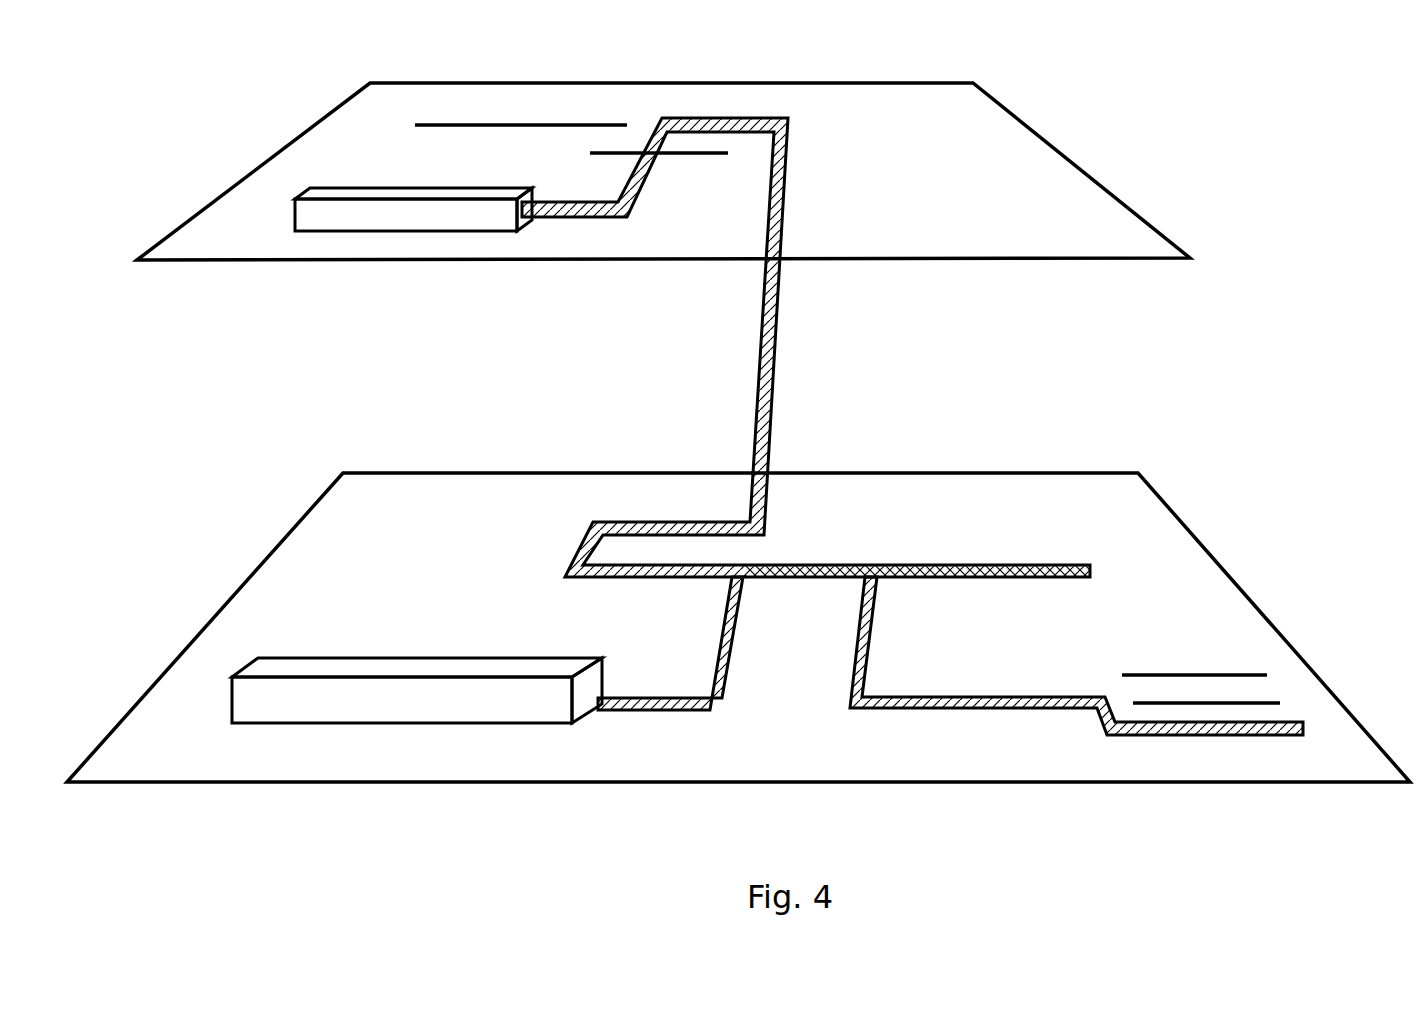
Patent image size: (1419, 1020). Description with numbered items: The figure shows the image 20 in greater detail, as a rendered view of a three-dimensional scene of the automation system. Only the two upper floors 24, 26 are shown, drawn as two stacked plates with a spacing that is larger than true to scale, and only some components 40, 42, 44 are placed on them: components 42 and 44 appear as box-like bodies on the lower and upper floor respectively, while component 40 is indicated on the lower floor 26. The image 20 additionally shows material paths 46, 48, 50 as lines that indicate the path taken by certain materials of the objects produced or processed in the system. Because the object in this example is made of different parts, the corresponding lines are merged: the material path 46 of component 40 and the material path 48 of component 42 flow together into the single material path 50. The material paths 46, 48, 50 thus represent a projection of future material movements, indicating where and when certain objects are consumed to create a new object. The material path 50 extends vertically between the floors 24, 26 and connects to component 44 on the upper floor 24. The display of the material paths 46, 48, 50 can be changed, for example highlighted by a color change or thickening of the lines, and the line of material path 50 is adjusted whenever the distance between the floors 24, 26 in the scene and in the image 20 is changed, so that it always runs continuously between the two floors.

The image 20 is at (1195, 193).
The upper floor 24 is at (1043, 137).
The upper floor 26 is at (1270, 607).
The component 40 is at (1173, 670).
The component 42 is at (355, 653).
The component 44 is at (387, 187).
The material path 46 is at (982, 713).
The material path 48 is at (650, 713).
The material path 50 is at (772, 397).